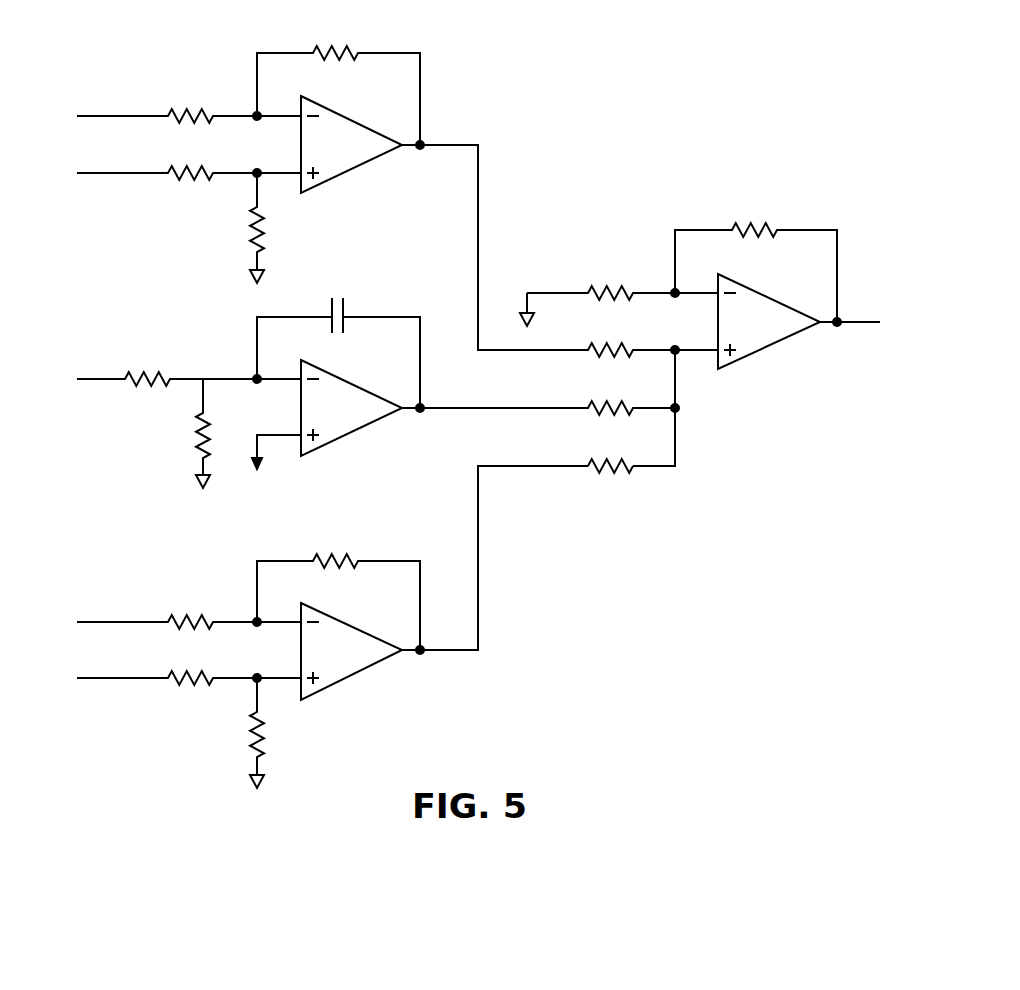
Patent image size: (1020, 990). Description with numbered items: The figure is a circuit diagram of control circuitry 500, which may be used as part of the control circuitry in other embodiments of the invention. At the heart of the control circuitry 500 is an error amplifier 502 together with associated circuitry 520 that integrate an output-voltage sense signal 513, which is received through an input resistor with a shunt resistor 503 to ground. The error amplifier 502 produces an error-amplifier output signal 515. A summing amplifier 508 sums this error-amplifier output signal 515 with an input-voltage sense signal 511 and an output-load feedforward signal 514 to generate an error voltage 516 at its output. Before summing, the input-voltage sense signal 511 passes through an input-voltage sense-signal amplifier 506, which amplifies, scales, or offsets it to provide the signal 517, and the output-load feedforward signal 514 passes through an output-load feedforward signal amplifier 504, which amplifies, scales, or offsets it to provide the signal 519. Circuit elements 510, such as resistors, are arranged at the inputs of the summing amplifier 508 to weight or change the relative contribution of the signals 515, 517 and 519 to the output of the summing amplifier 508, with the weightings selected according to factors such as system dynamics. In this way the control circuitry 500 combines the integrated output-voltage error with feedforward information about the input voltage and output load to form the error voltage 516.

The control circuitry 500 is at (675, 77).
The error amplifier 502 is at (350, 378).
The shunt resistor 503 is at (180, 407).
The output-load feedforward signal amplifier 504 is at (350, 620).
The input-voltage sense-signal amplifier 506 is at (350, 112).
The summing amplifier 508 is at (768, 296).
The circuit elements 510 is at (623, 485).
The input-voltage sense signal 511 is at (125, 115).
The output-voltage sense signal 513 is at (101, 378).
The output-load feedforward signal 514 is at (125, 621).
The error-amplifier output signal 515 is at (492, 408).
The error voltage 516 is at (861, 322).
The signal 517 is at (480, 206).
The signal 519 is at (480, 548).
The associated circuitry 520 is at (230, 335).